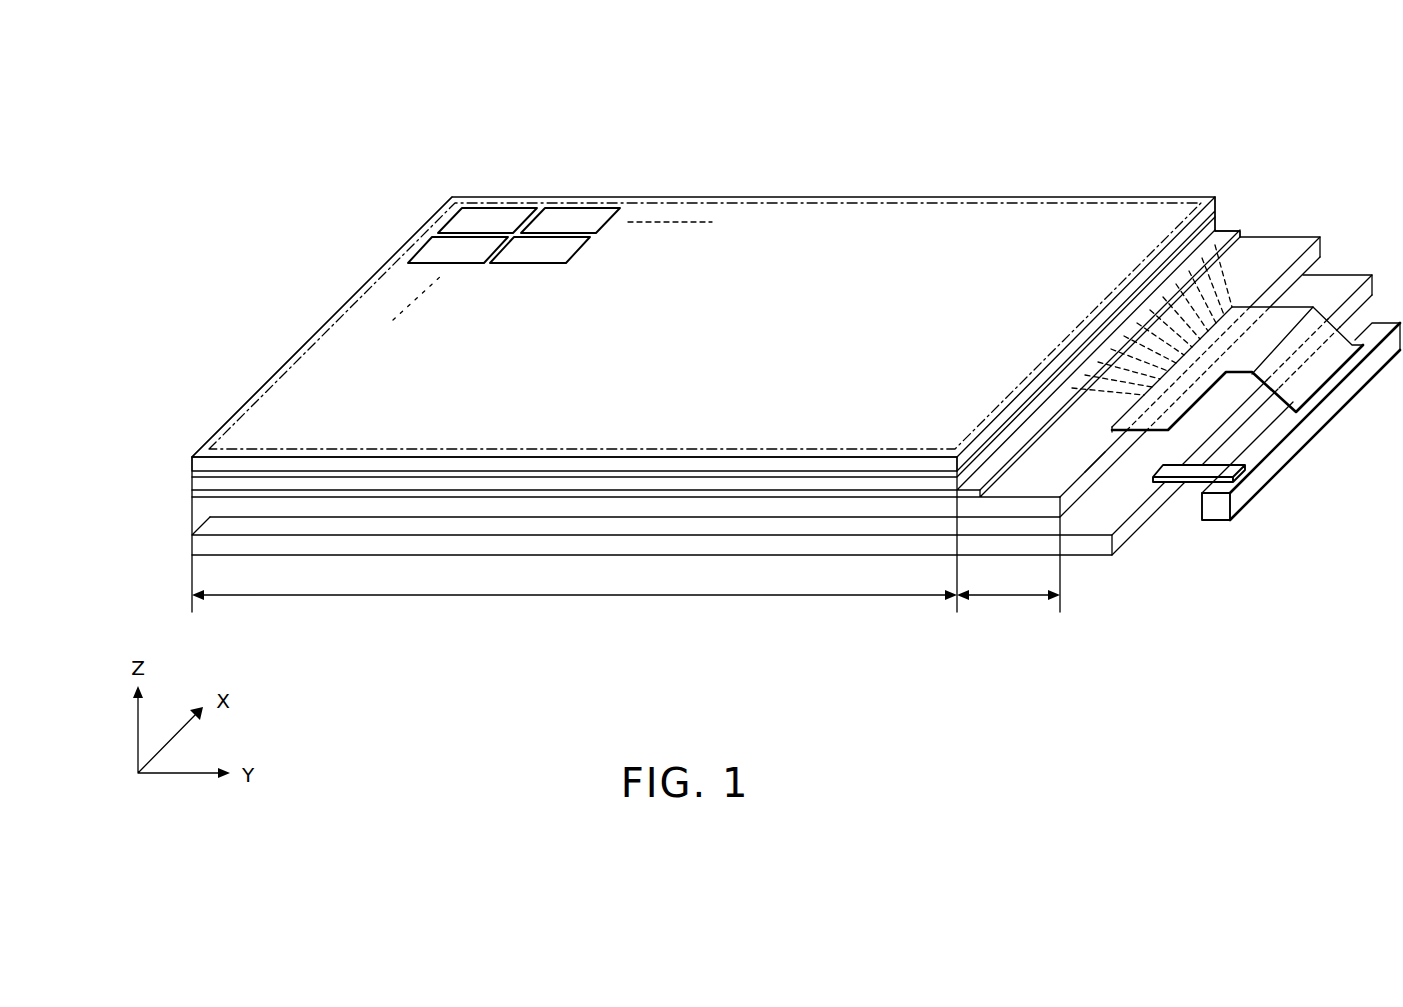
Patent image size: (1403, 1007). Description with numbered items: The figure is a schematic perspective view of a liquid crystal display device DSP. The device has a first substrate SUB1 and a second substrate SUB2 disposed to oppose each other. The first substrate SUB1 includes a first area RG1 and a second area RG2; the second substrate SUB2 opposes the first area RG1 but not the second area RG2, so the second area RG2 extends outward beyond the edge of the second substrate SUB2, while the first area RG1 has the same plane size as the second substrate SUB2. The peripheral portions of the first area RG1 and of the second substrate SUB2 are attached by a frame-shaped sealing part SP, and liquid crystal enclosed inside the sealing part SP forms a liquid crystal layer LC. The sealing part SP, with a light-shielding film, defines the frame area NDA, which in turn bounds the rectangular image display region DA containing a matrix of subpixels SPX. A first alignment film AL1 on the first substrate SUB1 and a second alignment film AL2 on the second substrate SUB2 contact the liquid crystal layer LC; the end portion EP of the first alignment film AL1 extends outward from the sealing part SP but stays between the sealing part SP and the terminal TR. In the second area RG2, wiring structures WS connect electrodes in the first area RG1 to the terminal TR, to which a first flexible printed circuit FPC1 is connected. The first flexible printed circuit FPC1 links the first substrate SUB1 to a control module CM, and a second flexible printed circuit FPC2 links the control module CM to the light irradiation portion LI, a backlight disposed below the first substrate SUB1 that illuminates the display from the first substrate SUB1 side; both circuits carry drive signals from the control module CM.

The liquid crystal display device DSP is at (1053, 172).
The first substrate SUB1 is at (190, 507).
The second substrate SUB2 is at (190, 460).
The first alignment film AL1 is at (190, 493).
The second alignment film AL2 is at (190, 474).
The sealing part SP is at (190, 484).
The liquid crystal layer LC is at (338, 326).
The light irradiation portion LI is at (190, 545).
The image display region DA is at (735, 217).
The frame area NDA is at (850, 199).
The subpixel SPX is at (566, 206).
The end portion of the first alignment film EP is at (1227, 230).
The wiring structure WS is at (1232, 296).
The terminal TR is at (1103, 470).
The first flexible printed circuit FPC1 is at (1297, 302).
The second flexible printed circuit FPC2 is at (1190, 484).
The control module CM is at (1308, 443).
The first area RG1 is at (574, 608).
The second area RG2 is at (1008, 608).